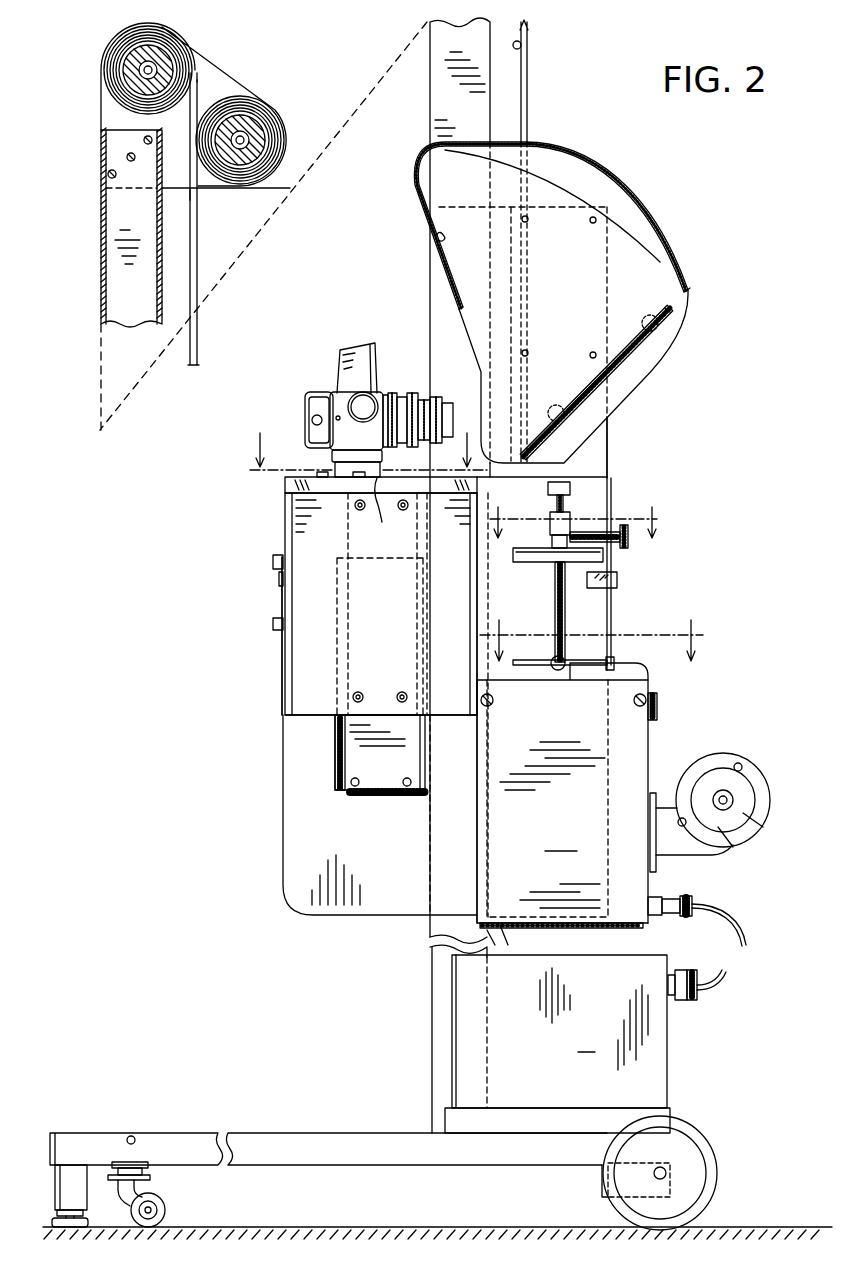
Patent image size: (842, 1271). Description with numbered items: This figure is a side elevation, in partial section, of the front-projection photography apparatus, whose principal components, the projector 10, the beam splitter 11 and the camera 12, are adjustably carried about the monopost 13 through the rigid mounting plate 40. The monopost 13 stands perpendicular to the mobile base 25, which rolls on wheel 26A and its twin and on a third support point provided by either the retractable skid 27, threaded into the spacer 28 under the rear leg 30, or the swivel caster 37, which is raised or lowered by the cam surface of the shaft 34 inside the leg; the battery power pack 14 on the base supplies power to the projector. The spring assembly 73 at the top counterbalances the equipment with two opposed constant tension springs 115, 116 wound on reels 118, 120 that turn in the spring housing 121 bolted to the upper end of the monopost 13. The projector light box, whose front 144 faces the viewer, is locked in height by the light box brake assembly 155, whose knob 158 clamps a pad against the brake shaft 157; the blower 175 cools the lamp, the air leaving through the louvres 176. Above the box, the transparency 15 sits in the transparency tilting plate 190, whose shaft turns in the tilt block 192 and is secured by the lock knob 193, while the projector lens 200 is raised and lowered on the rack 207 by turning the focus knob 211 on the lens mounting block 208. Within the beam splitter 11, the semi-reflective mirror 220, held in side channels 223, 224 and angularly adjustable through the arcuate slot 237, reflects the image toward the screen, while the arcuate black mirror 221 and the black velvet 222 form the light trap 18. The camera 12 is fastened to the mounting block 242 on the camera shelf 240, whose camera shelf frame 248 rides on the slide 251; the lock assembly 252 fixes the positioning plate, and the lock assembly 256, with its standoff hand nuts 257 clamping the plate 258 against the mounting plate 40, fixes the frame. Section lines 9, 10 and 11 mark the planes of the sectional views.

The section line 9- 9 is at (591, 630).
The projector 10 is at (657, 727).
The beam splitter 11 is at (636, 413).
The camera 12 is at (316, 379).
The monopost 13 is at (105, 238).
The battery power pack 14 is at (585, 1029).
The transparency 15 is at (548, 653).
The light trap 18 is at (608, 208).
The base 25 is at (672, 1187).
The wheel 26A is at (700, 1141).
The retractable skid 27 is at (84, 1226).
The spacer 28 is at (68, 1184).
The rear leg 30 is at (355, 1163).
The shaft 34 is at (133, 1137).
The swivel caster 37 is at (167, 1209).
The mounting plate 40 is at (292, 847).
The spring assembly 73 is at (210, 203).
The Negator type spring 115 is at (196, 72).
The Negator type spring 116 is at (200, 90).
The reel 118 is at (157, 52).
The reel 120 is at (258, 133).
The spring housing 121 is at (244, 93).
The front 144 is at (562, 795).
The light box brake assembly 155 is at (614, 577).
The brake shaft 157 is at (611, 605).
The knob 158 is at (656, 697).
The blower 175 is at (717, 744).
The louvres 176 is at (432, 762).
The transparency tilting plate 190 is at (543, 655).
The tilt block 192 is at (565, 650).
The lock knob 193 is at (612, 658).
The projector lens 200 is at (552, 542).
The rack 207 is at (564, 503).
The lens mounting block 208 is at (557, 516).
The focus knob 211 is at (628, 538).
The semi-reflective mirror 220 is at (627, 360).
The arcuate black mirror 221 is at (556, 168).
The black velvet 222 is at (436, 238).
The side channel 223 is at (665, 308).
The side channel 224 is at (627, 352).
The arcuate slot 237 is at (660, 328).
The camera shelf 240 is at (276, 697).
The mounting block 242 is at (343, 470).
The camera shelf frame 248 is at (302, 708).
The slide 251 is at (338, 560).
The lock assembly 252 is at (393, 508).
The lock assembly 256 is at (274, 599).
The standoff hand nut 257 is at (275, 558).
The plate 258 is at (280, 585).